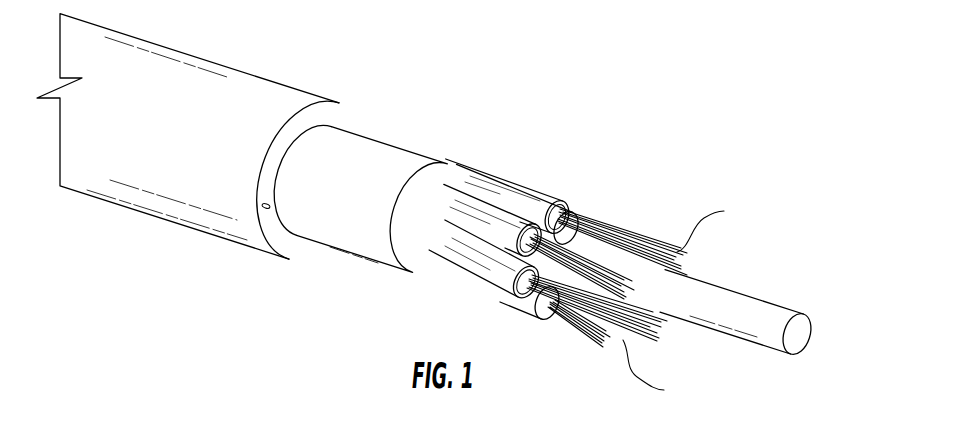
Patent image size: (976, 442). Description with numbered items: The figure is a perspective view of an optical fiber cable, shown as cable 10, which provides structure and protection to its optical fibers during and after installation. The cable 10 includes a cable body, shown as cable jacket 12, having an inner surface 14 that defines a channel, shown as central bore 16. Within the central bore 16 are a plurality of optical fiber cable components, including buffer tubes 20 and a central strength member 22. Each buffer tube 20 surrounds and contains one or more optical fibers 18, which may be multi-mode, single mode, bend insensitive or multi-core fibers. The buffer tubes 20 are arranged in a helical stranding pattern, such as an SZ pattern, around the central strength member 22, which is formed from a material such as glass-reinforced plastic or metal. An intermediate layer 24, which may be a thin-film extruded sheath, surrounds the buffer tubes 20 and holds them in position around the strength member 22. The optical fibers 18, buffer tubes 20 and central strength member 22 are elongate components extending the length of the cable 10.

The cable 10 is at (683, 150).
The cable jacket 12 is at (277, 100).
The inner surface 14 is at (292, 220).
The central bore 16 is at (303, 134).
The optical fibers 18 is at (637, 301).
The buffer tubes 20 is at (543, 192).
The central strength member 22 is at (752, 305).
The layer 24 is at (415, 153).